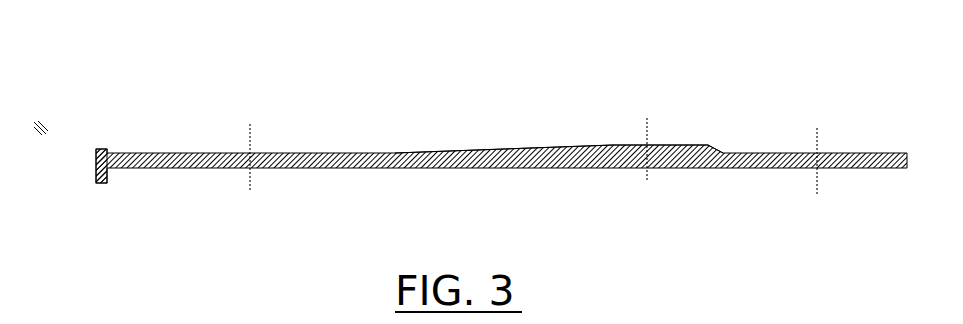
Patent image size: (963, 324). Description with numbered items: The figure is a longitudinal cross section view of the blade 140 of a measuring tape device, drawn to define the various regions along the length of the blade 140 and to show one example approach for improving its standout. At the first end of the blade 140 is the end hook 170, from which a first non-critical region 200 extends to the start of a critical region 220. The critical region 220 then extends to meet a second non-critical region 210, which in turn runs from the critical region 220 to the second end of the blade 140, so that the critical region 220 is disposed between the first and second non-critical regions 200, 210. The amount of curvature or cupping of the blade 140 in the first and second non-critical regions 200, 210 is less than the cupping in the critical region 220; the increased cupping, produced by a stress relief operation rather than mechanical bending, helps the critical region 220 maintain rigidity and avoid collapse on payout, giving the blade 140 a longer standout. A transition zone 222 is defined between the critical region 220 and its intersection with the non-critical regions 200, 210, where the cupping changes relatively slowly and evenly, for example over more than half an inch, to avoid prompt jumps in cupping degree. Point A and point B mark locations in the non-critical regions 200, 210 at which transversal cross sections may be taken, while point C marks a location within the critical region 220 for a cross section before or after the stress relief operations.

The blade 140 is at (550, 178).
The end hook 170 is at (96, 182).
The first non-critical region 200 is at (395, 138).
The second non-critical region 210 is at (899, 137).
The critical region 220 is at (708, 140).
The transition zone 222 is at (708, 157).
The point A is at (252, 158).
The point B is at (818, 158).
The point C is at (648, 158).